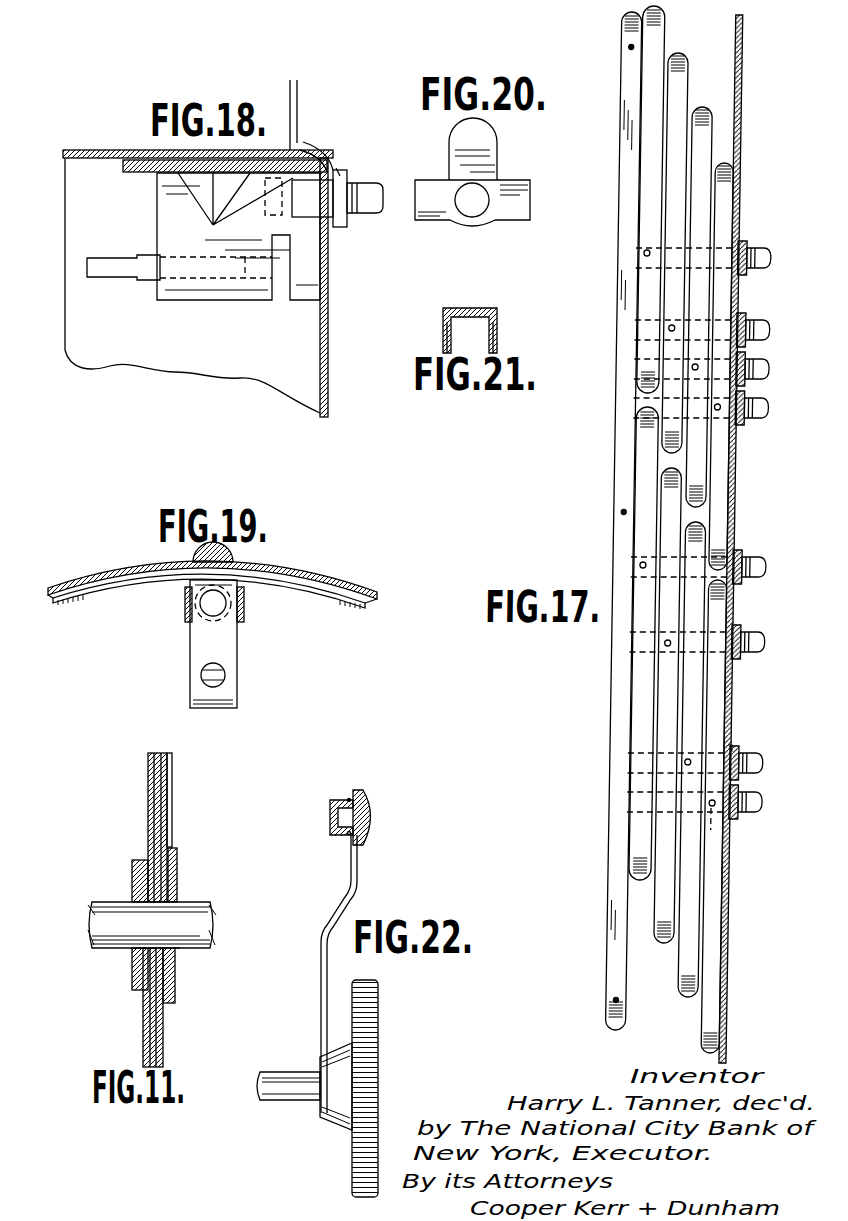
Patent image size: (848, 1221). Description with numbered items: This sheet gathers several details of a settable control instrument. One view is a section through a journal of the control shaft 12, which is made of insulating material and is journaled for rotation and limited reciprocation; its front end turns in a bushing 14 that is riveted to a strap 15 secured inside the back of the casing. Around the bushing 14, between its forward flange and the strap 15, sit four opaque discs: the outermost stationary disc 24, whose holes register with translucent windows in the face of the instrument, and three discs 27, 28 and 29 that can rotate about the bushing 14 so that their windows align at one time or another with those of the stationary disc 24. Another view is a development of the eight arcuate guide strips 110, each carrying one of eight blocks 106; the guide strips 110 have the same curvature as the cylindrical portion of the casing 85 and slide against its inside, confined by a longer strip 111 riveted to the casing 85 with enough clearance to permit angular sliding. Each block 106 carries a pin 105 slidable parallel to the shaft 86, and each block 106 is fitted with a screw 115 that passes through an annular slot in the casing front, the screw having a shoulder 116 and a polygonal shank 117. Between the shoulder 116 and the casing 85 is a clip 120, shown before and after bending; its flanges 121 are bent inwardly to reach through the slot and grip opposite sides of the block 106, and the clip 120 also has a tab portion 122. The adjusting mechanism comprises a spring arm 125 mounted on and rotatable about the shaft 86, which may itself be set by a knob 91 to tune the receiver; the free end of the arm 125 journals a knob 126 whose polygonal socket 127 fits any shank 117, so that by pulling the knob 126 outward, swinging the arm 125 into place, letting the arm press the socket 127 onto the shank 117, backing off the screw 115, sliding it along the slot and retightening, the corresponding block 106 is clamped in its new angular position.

In FIG. 11, the shaft 12 is at (100, 912).
In FIG. 11, the bushing 14 is at (178, 955).
In FIG. 11, the strap 15 is at (132, 980).
In FIG. 11, the stationary disc 24 is at (172, 831).
In FIG. 11, the rotatable disc 27 is at (158, 784).
In FIG. 11, the rotatable disc 28 is at (156, 809).
In FIG. 11, the rotatable disc 29 is at (150, 834).
In FIG. 18, the casing 85 is at (128, 152).
In FIG. 19, the casing 85 is at (98, 568).
In FIG. 17, the casing 85 is at (744, 832).
In FIG. 22, the shaft 86 is at (292, 1078).
In FIG. 22, the knob 91 is at (378, 1044).
In FIG. 18, the pin 105 is at (148, 282).
In FIG. 19, the pin 105 is at (225, 679).
In FIG. 18, the block 106 is at (157, 228).
In FIG. 19, the block 106 is at (190, 650).
In FIG. 17, the block 106 is at (665, 330).
In FIG. 18, the guide strip 110 is at (235, 211).
In FIG. 19, the guide strip 110 is at (53, 601).
In FIG. 17, the guide strip 110 is at (653, 348).
In FIG. 18, the strip 111 is at (130, 172).
In FIG. 19, the strip 111 is at (325, 584).
In FIG. 17, the strip 111 is at (636, 265).
In FIG. 18, the screw 115 is at (290, 220).
In FIG. 19, the screw 115 is at (240, 628).
In FIG. 18, the shoulder 116 is at (318, 192).
In FIG. 17, the shoulder 116 is at (757, 411).
In FIG. 18, the polygonal shank 117 is at (373, 214).
In FIG. 17, the polygonal shank 117 is at (776, 268).
In FIG. 20, the clip 120 is at (478, 224).
In FIG. 21, the clip 120 is at (470, 312).
In FIG. 18, the flange 121 is at (345, 177).
In FIG. 20, the flange 121 is at (428, 187).
In FIG. 21, the flange 121 is at (443, 333).
In FIG. 19, the flange 121 is at (185, 609).
In FIG. 17, the flange 121 is at (724, 830).
In FIG. 18, the tab portion 122 is at (310, 142).
In FIG. 20, the tab portion 122 is at (497, 156).
In FIG. 17, the tab portion 122 is at (747, 752).
In FIG. 22, the spring arm 125 is at (322, 918).
In FIG. 22, the knob 126 is at (372, 797).
In FIG. 22, the socket 127 is at (330, 822).